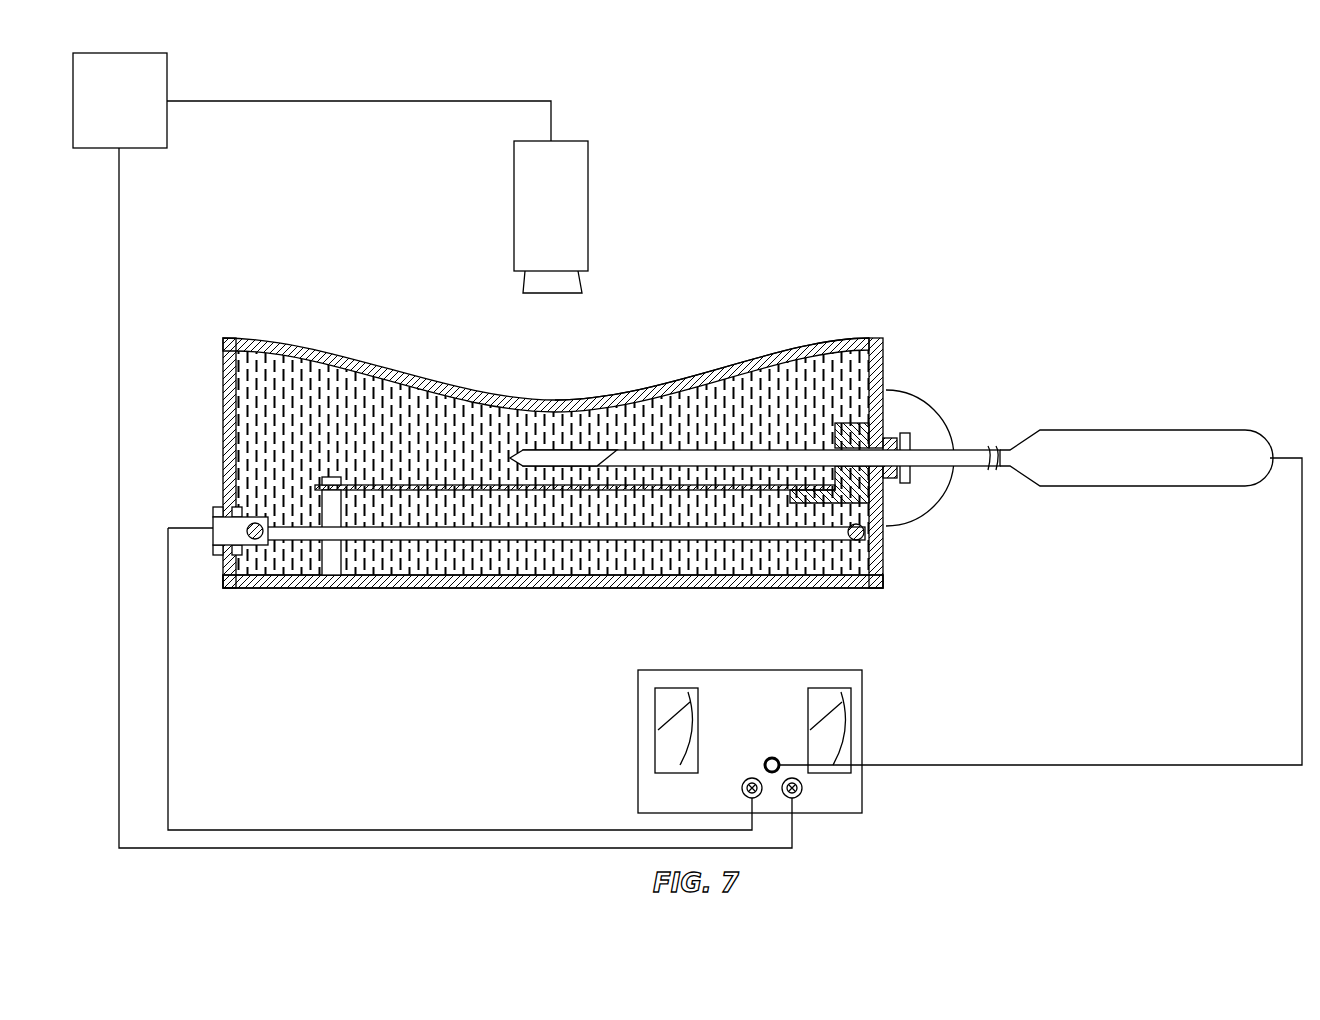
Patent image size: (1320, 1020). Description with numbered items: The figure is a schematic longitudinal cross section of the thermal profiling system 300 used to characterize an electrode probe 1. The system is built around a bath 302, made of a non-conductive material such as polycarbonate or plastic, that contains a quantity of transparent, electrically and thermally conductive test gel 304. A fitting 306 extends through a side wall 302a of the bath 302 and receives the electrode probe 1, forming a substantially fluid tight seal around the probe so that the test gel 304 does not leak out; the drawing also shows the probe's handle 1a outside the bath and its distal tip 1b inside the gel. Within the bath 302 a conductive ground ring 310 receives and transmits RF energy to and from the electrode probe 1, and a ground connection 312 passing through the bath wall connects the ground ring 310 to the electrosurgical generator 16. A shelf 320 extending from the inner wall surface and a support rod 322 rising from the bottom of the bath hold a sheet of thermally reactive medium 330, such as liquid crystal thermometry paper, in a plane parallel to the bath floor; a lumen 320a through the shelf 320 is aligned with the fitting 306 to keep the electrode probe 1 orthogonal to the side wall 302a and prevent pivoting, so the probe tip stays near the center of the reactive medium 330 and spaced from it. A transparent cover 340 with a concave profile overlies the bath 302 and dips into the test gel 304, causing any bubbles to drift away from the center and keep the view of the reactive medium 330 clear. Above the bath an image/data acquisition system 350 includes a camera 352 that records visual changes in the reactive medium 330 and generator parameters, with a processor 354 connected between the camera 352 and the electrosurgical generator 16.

The thermal profiling system 300 is at (911, 139).
The bath 302 is at (882, 367).
The side wall 302a is at (858, 585).
The test gel 304 is at (270, 360).
The fitting 306 is at (903, 433).
The ground ring 310 is at (528, 532).
The ground connection 312 is at (220, 510).
The shelf 320 is at (864, 531).
The lumen 320a is at (850, 422).
The support rod 322 is at (320, 554).
The thermally reactive medium 330 is at (415, 472).
The cover 340 is at (738, 362).
The image/data acquisition system 350 is at (591, 189).
The camera 352 is at (571, 218).
The processor 354 is at (143, 113).
The electrosurgical generator 16 is at (708, 667).
The electrode probe 1 is at (891, 397).
The handle 1a is at (972, 445).
The tip 1b is at (536, 445).